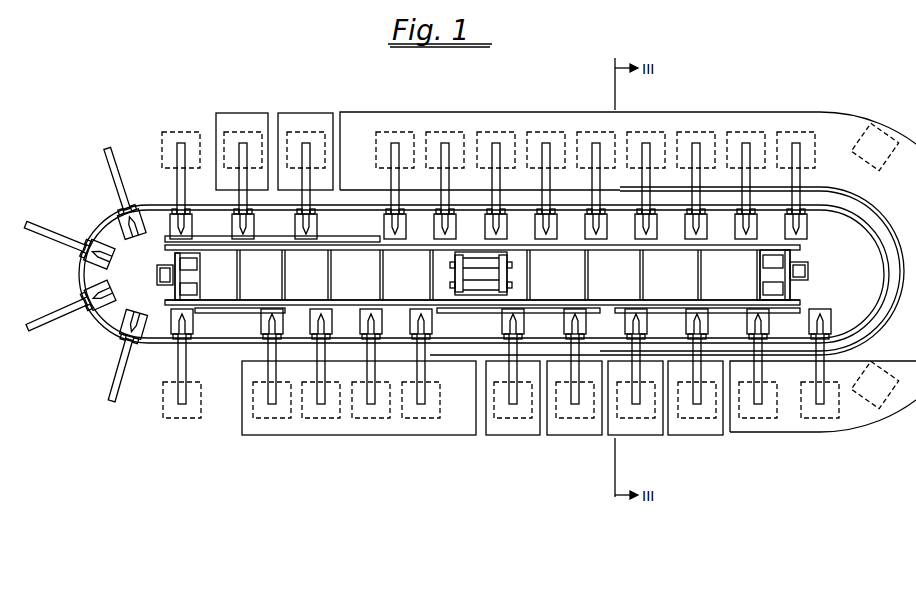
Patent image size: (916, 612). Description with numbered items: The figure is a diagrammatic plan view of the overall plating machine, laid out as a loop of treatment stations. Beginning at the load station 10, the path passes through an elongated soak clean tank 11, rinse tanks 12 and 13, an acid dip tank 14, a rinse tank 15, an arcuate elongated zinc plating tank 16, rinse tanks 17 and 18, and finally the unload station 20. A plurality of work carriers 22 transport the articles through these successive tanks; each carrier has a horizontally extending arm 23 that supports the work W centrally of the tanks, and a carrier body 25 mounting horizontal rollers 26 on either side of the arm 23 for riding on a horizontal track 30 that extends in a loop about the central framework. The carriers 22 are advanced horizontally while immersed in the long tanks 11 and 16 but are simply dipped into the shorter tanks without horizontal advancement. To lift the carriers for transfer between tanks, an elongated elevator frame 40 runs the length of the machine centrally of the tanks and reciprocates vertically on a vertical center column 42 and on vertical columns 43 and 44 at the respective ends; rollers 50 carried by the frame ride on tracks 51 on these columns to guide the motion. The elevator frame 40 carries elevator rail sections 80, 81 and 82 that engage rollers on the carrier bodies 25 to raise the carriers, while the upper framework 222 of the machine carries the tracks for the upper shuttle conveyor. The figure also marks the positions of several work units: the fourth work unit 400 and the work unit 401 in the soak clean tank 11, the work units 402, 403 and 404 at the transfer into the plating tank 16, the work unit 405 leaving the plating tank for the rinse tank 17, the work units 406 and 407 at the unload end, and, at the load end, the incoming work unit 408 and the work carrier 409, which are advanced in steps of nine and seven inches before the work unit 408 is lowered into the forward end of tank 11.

The load station 10 is at (176, 426).
The soak clean tank 11 is at (310, 436).
The rinse tank 12 is at (525, 436).
The rinse tank 13 is at (585, 436).
The acid dip tank 14 is at (641, 436).
The rinse tank 15 is at (715, 436).
The arcuate elongated zinc plating tank 16 is at (824, 434).
The rinse tank 17 is at (305, 113).
The rinse tank 18 is at (260, 113).
The unload station 20 is at (165, 118).
The work carrier 22 is at (808, 225).
The horizontal arm 23 is at (800, 176).
The carrier body 25 is at (524, 320).
The horizontal roller 26 is at (499, 337).
The horizontal track 30 is at (100, 226).
The elevator frame 40 is at (470, 312).
The vertical center column 42 is at (455, 275).
The vertical column 43 is at (160, 266).
The vertical column 44 is at (806, 268).
The roller 50 is at (176, 286).
The track 51 is at (199, 282).
The elevator rail section 80 is at (256, 313).
The elevator rail section 81 is at (672, 313).
The elevator rail section 82 is at (338, 238).
The upper framework 222 is at (382, 300).
The work unit 400 is at (432, 420).
The work unit 401 is at (375, 420).
The work unit 402 is at (768, 420).
The work unit 403 is at (697, 420).
The work unit 404 is at (840, 420).
The work unit 405 is at (394, 130).
The work unit 406 is at (193, 130).
The work unit 407 is at (230, 130).
The work unit 408 is at (196, 420).
The work carrier 409 is at (127, 360).
The work W is at (419, 418).